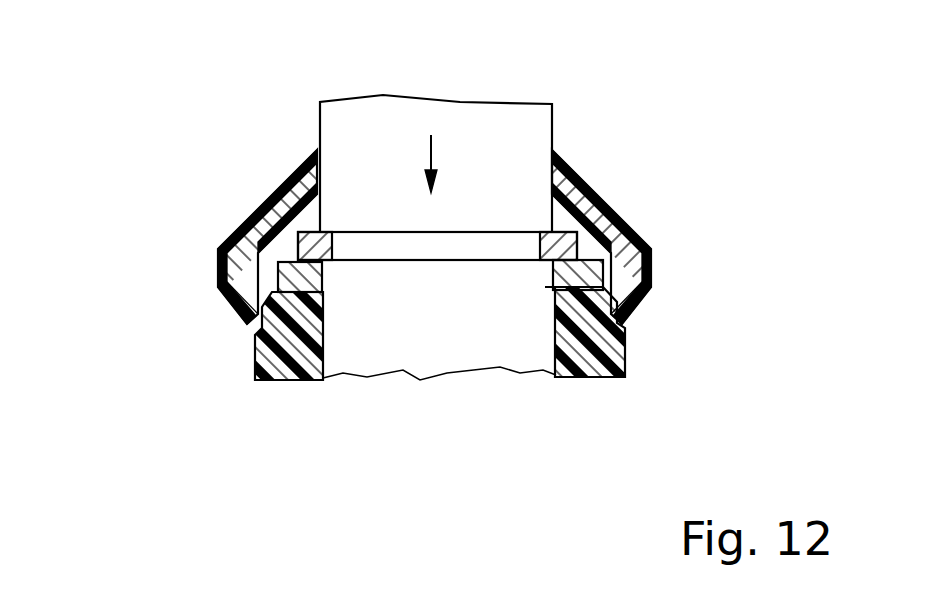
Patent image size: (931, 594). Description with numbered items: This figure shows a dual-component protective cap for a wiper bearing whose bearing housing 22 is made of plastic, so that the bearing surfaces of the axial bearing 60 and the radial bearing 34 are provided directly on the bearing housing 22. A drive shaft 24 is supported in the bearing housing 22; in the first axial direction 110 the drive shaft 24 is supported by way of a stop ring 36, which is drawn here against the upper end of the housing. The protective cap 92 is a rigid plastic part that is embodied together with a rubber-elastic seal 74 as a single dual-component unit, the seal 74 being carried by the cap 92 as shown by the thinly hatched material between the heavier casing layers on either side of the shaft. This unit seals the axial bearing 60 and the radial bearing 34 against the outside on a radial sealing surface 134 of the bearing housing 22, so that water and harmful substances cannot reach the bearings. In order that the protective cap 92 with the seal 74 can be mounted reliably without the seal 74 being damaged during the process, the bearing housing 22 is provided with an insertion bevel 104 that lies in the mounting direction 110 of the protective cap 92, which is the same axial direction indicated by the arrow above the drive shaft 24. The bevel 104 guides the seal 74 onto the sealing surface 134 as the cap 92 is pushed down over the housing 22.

The bearing housing 22 is at (590, 362).
The drive shaft 24 is at (517, 118).
The radial bearing 34 is at (257, 368).
The stop ring 36 is at (650, 224).
The axial bearing 60 is at (233, 313).
The seal 74 is at (228, 282).
The protective cap 92 is at (272, 213).
The insertion bevel 104 is at (660, 275).
The first axial direction 110 is at (430, 152).
The radial sealing surface 134 is at (620, 318).